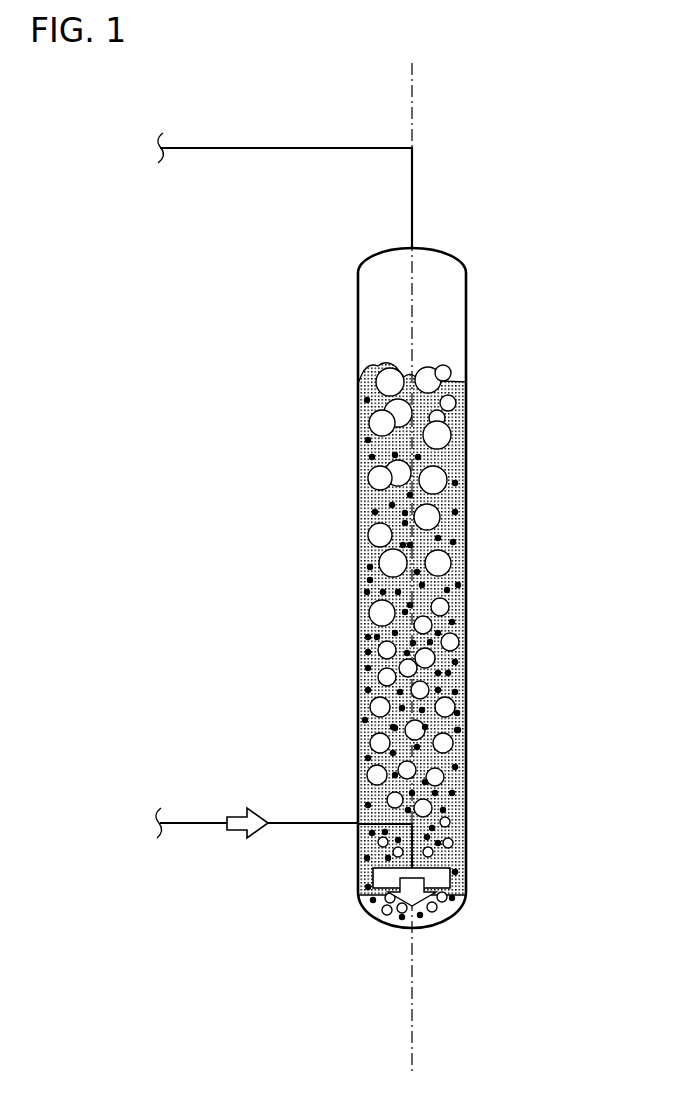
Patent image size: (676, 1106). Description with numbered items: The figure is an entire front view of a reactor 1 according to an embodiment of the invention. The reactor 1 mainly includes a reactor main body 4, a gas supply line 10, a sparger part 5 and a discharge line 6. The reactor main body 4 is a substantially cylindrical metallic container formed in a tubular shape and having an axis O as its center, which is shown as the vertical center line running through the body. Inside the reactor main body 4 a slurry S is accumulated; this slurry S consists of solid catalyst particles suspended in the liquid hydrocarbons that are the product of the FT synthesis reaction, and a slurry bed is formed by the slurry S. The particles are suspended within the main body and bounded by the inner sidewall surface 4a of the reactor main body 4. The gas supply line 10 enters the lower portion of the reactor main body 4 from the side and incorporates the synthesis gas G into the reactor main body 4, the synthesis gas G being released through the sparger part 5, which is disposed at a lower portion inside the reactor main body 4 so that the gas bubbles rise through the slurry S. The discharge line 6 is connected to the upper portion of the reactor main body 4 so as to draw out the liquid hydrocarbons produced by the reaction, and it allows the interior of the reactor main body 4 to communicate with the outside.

The reactor 1 is at (344, 569).
The reactor main body 4 is at (457, 338).
The inner sidewall surface 4a is at (374, 508).
The slurry S is at (455, 528).
The sparger part 5 is at (450, 880).
The discharge line 6 is at (253, 148).
The gas supply line 10 is at (300, 826).
The synthesis gas G is at (233, 817).
The axis O is at (413, 1042).